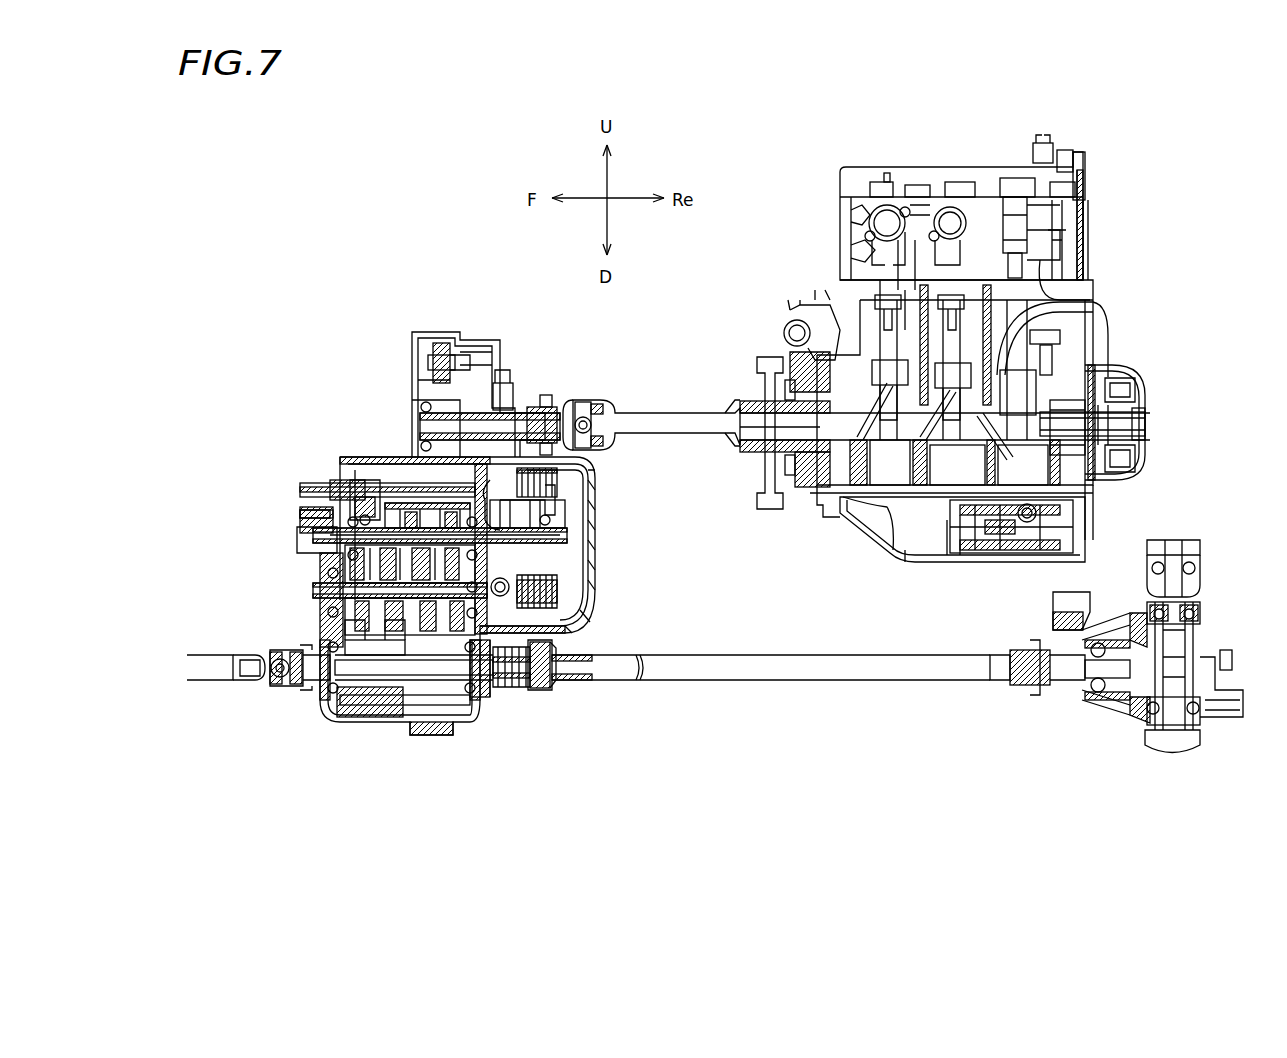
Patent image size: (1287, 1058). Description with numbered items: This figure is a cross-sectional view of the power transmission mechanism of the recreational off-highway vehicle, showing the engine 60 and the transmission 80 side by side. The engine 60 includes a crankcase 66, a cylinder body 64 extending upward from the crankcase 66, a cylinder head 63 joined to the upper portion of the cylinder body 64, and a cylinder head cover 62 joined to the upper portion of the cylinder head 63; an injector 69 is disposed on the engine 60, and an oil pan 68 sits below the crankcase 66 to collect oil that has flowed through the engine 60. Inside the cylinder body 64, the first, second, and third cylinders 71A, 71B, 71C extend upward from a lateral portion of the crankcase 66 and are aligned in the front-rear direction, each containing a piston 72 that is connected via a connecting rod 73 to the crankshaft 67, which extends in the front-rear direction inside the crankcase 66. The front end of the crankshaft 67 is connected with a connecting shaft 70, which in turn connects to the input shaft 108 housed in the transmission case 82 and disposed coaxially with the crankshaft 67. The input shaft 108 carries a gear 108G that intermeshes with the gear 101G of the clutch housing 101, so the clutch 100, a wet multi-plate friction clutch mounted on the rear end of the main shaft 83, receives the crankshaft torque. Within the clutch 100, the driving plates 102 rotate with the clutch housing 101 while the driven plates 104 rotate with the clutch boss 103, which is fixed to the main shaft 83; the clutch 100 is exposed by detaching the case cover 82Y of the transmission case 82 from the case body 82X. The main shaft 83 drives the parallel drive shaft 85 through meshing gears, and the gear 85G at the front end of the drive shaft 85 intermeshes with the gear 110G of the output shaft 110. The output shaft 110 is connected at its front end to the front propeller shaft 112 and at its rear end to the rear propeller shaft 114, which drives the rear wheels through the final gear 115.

The engine 60 is at (815, 222).
The cylinder head cover 62 is at (1085, 168).
The cylinder head 63 is at (1085, 225).
The cylinder body 64 is at (1150, 320).
The crankcase 66 is at (1148, 458).
The crankshaft 67 is at (1105, 410).
The oil pan 68 is at (1105, 540).
The injector 69 is at (1246, 348).
The connecting shaft 70 is at (650, 413).
The first cylinder 71A is at (900, 310).
The second cylinder 71B is at (975, 280).
The third cylinder 71C is at (1050, 260).
The piston 72 is at (885, 300).
The connecting rod 73 is at (840, 300).
The transmission 80 is at (355, 500).
The transmission case 82 is at (318, 558).
The case body 82X is at (420, 455).
The case cover 82Y is at (590, 500).
The main shaft 83 is at (410, 492).
The drive shaft 85 is at (322, 600).
The gear 85G is at (315, 512).
The clutch 100 is at (560, 537).
The clutch housing 101 is at (518, 688).
The gear 101G is at (495, 690).
The driving plates 102 is at (552, 610).
The clutch boss 103 is at (595, 658).
The driven plates 104 is at (550, 685).
The input shaft 108 is at (438, 345).
The gear 108G is at (505, 365).
The output shaft 110 is at (395, 705).
The gear 110G is at (355, 720).
The front propeller shaft 112 is at (213, 682).
The rear propeller shaft 114 is at (905, 670).
The final gear 115 is at (1115, 725).